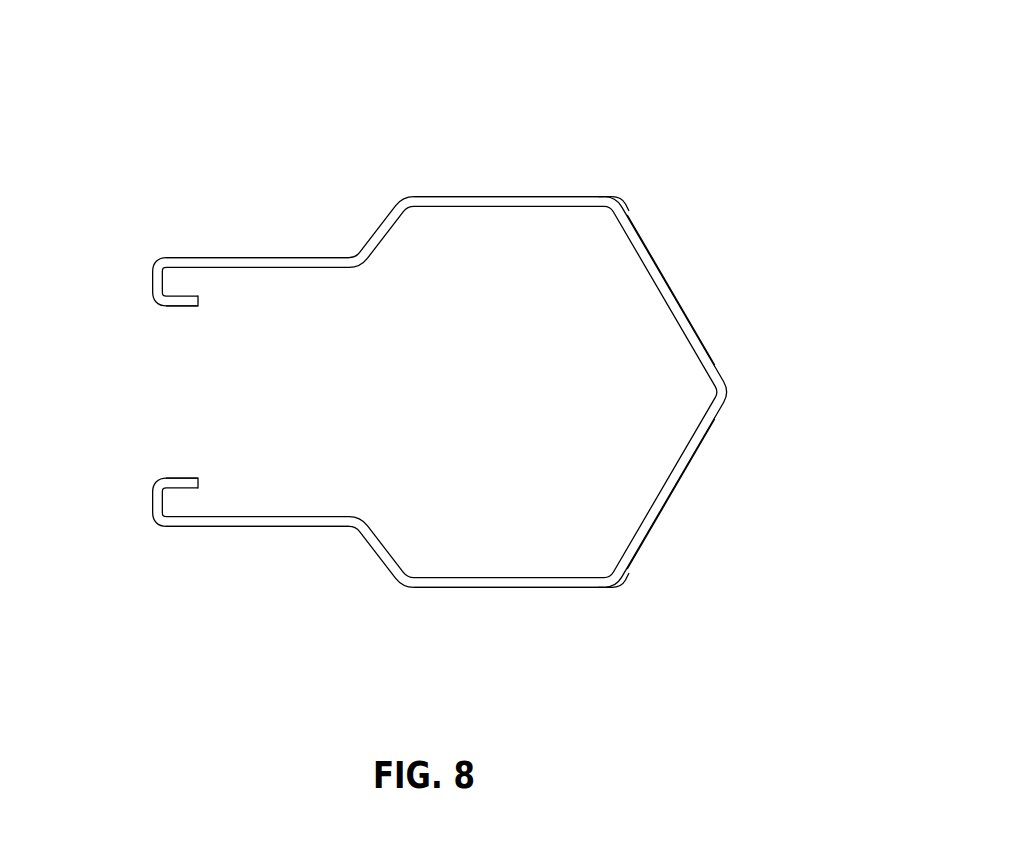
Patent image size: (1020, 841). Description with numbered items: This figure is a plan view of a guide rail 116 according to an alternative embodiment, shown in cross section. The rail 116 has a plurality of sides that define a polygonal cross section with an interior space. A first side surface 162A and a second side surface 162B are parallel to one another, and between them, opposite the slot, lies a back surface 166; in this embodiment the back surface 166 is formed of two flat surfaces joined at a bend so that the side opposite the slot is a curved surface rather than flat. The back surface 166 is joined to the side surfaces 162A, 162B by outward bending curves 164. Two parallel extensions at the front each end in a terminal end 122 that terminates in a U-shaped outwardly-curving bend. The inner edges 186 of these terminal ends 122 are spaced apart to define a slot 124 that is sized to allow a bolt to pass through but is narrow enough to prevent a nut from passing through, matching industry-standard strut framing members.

The guide rail 116 is at (640, 105).
The first side surface 162A is at (526, 196).
The second side surface 162B is at (507, 589).
The outward bending curves 164 is at (620, 201).
The back surface 166 is at (683, 302).
The terminal end 122 is at (153, 278).
The inner edges 186 is at (190, 306).
The slot 124 is at (190, 393).